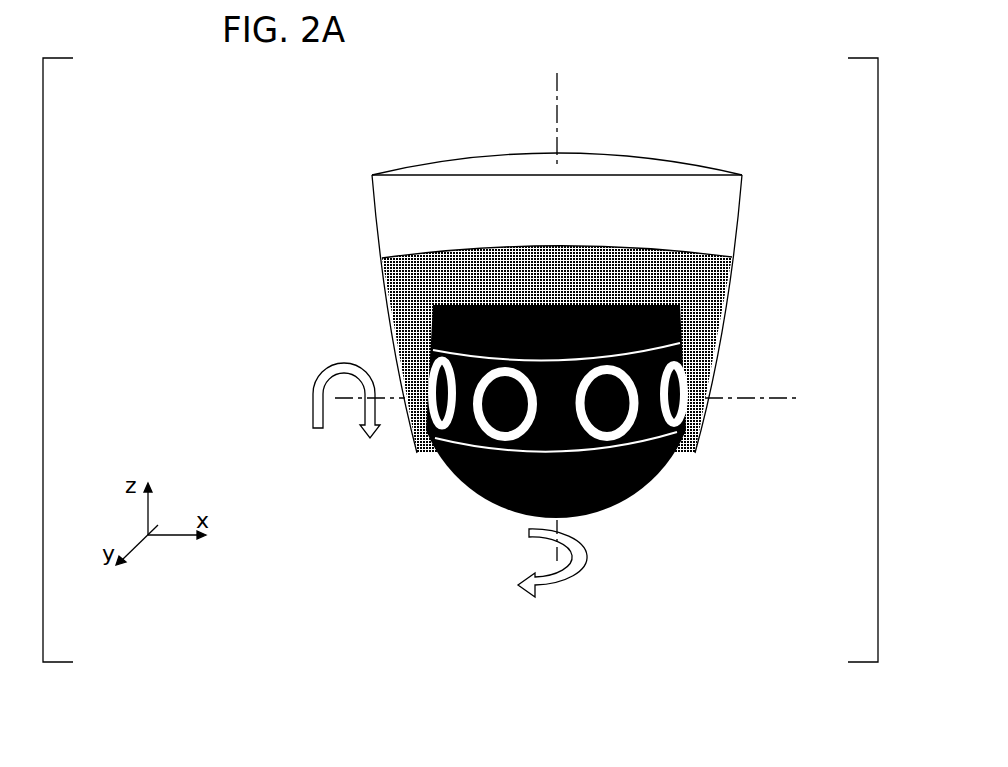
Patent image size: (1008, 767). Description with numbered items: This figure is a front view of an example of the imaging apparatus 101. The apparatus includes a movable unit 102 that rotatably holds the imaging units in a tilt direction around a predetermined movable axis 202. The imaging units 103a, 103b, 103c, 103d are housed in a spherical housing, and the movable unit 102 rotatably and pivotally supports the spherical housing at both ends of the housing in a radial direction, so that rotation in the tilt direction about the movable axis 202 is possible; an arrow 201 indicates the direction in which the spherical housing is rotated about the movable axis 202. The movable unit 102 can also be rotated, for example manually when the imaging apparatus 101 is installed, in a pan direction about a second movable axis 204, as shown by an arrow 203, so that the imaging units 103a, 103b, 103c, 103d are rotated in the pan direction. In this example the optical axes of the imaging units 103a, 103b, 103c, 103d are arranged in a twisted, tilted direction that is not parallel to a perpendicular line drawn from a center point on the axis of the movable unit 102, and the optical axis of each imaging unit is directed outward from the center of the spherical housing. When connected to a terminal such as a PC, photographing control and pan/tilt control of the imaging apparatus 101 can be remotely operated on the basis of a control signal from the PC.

The imaging apparatus 101 is at (372, 203).
The movable unit 102 is at (379, 282).
The imaging unit 103a is at (441, 428).
The imaging unit 103b is at (490, 432).
The imaging unit 103c is at (612, 373).
The imaging unit 103d is at (677, 428).
The arrow 201 is at (327, 371).
The movable axis 202 is at (348, 397).
The arrow 203 is at (585, 578).
The movable axis 204 is at (553, 551).